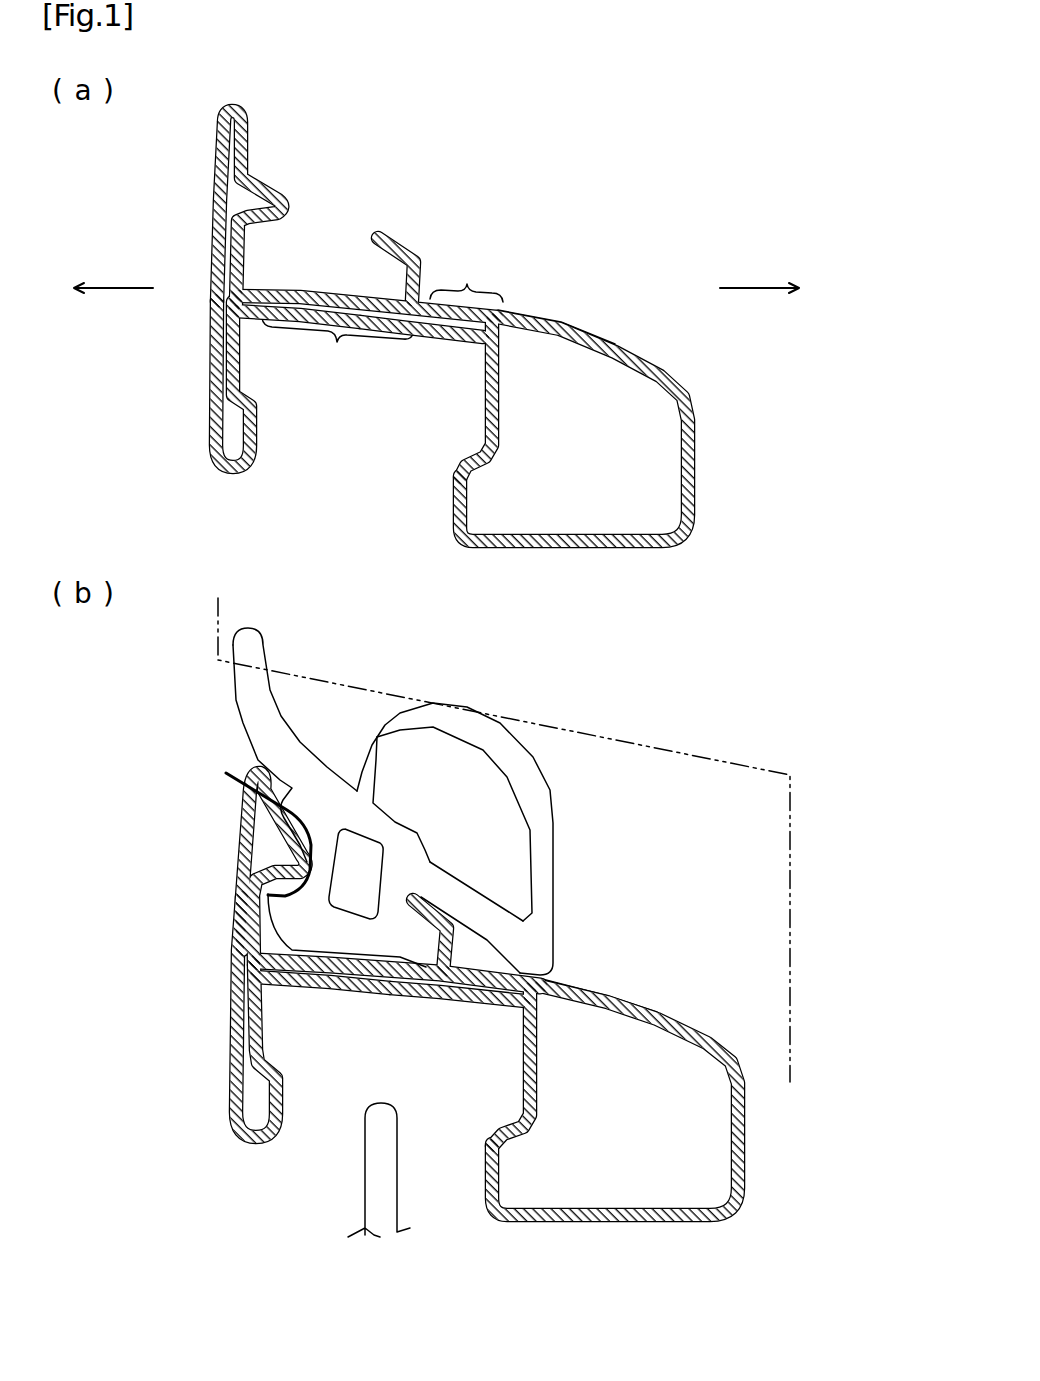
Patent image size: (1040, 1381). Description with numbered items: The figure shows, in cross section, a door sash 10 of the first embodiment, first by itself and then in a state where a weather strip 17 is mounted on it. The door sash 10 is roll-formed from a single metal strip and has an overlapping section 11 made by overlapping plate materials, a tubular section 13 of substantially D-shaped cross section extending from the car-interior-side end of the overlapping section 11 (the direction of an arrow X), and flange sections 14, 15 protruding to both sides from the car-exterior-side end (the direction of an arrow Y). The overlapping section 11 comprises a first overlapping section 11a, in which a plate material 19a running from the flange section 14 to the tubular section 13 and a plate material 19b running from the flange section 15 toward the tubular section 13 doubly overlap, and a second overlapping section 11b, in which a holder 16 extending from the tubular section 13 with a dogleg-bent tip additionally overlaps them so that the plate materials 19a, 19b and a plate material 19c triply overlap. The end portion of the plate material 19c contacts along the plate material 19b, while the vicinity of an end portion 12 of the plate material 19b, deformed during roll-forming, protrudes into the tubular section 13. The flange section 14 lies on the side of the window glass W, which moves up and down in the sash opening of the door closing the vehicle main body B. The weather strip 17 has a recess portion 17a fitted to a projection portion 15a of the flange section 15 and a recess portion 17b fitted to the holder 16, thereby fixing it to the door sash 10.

The door sash 10 is at (482, 663).
The overlapping section 11 is at (302, 287).
The first overlapping section 11a is at (337, 348).
The second overlapping section 11b is at (466, 277).
The end portion 12 is at (499, 333).
The tubular section 13 is at (696, 470).
The flange section 14 is at (213, 383).
The flange section 15 is at (218, 163).
The projection portion 15a is at (254, 891).
The holder 16 is at (407, 251).
The weather strip 17 is at (561, 816).
The recess portion 17a is at (241, 826).
The recess portion 17b is at (408, 893).
The plate material 19a is at (277, 306).
The plate material 19b is at (366, 304).
The plate material 19c is at (544, 324).
The vehicle main body B is at (713, 760).
The window glass W is at (384, 1177).
The arrow X is at (113, 268).
The arrow Y is at (759, 270).